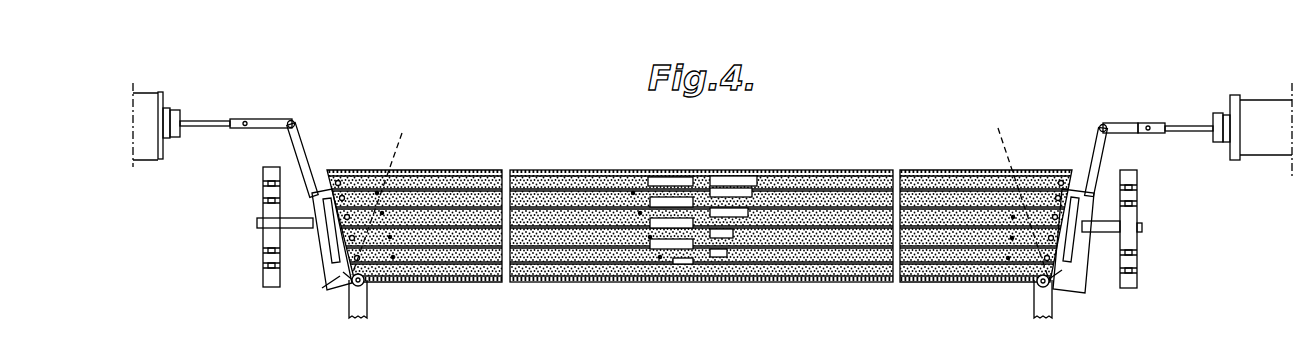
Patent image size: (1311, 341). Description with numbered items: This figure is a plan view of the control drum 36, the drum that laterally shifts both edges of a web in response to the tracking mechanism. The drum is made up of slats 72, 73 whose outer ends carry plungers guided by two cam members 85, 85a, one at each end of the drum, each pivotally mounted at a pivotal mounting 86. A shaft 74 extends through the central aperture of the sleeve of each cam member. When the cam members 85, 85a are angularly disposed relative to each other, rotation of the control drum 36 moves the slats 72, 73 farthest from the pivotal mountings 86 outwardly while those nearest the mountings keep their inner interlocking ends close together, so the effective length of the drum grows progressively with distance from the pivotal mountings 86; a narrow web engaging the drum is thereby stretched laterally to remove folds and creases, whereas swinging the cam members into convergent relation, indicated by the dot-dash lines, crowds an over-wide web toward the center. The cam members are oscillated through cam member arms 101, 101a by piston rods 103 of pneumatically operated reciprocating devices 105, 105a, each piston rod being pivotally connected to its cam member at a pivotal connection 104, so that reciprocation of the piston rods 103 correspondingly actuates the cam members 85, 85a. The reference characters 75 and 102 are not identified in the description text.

The control drum 36 is at (838, 282).
The slats 72 is at (588, 258).
The slats 73 is at (965, 257).
The shaft 74 is at (294, 229).
The roller 75 is at (268, 232).
The cam member 85 is at (1068, 289).
The cam member 85a is at (322, 288).
The pivotal mountings 86 is at (365, 285).
The cam member arm 101 is at (1103, 157).
The cam member arm 101a is at (296, 139).
The pivot 102 is at (1103, 124).
The piston rod 103 is at (205, 122).
The pivotal connection 104 is at (247, 121).
The pneumatically operated reciprocating device 105 is at (1270, 147).
The pneumatically operated reciprocating device 105a is at (147, 142).